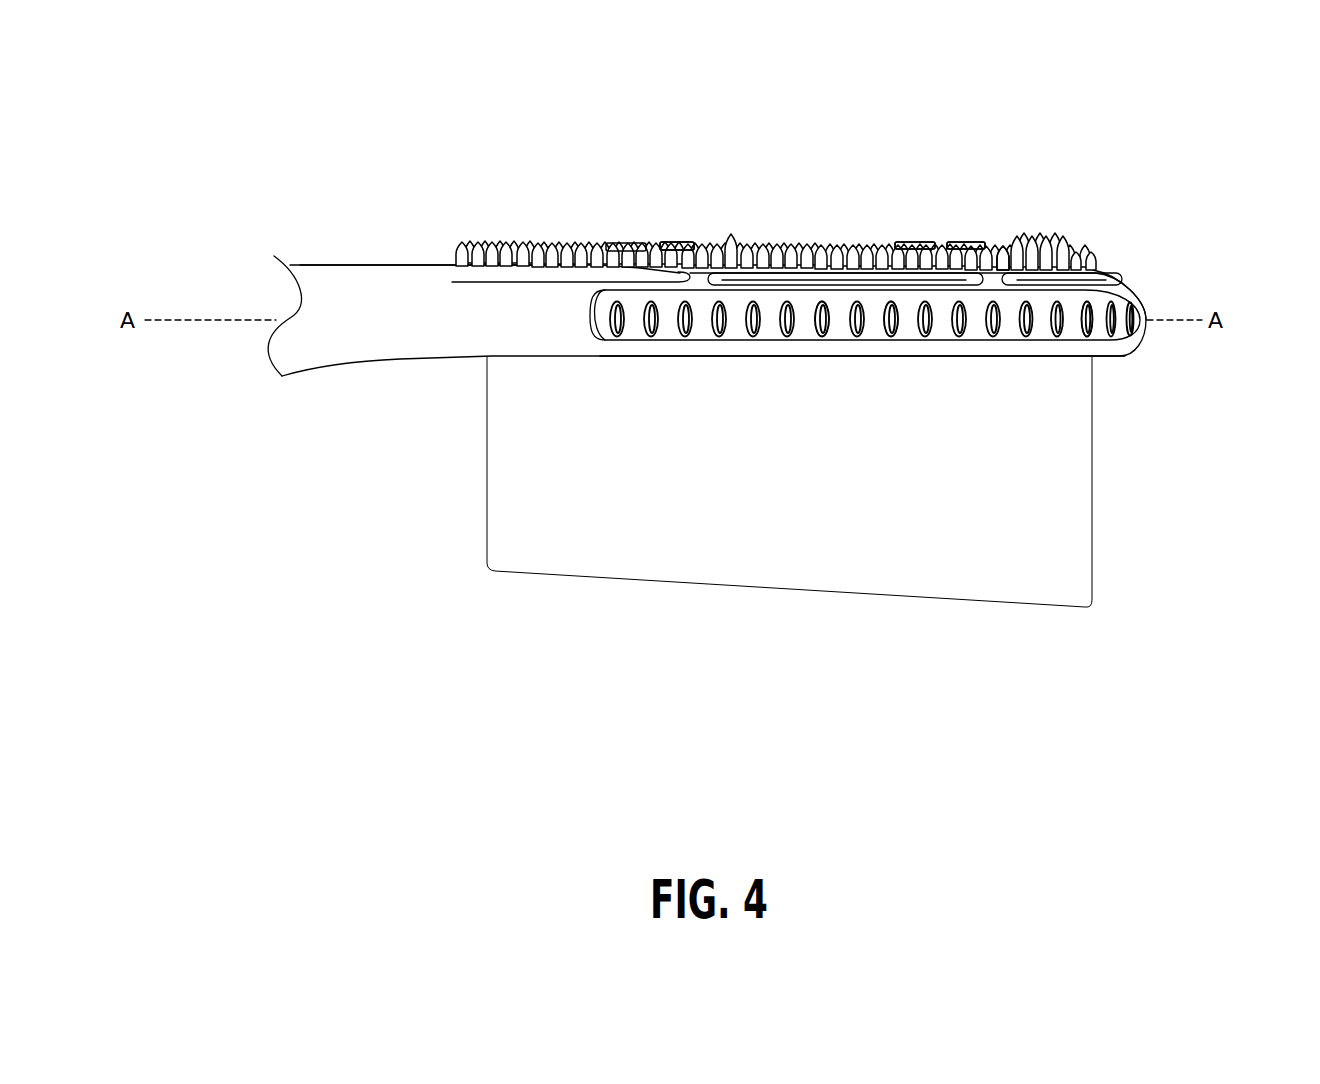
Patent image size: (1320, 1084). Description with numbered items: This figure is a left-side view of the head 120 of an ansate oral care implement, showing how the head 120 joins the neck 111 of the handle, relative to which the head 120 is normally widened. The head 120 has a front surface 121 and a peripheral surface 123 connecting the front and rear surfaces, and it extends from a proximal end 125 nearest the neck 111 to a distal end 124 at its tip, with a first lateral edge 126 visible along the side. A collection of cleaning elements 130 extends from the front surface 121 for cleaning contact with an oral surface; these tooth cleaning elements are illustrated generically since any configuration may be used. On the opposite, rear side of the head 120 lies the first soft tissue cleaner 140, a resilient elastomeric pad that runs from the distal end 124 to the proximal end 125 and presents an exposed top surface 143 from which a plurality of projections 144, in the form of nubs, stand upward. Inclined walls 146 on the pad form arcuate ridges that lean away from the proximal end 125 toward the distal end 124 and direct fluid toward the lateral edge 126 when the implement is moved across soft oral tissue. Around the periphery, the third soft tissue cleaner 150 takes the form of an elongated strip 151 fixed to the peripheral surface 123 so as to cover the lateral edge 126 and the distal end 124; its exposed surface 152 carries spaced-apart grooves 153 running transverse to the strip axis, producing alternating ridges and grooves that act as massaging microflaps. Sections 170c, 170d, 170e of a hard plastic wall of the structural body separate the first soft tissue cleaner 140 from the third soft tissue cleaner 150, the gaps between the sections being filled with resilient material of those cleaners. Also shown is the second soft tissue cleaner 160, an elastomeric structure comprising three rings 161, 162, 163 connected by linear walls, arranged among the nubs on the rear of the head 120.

The neck 111 is at (342, 288).
The head 120 is at (807, 411).
The front surface 121 is at (1022, 372).
The peripheral surface 123 is at (578, 320).
The distal end 124 is at (1113, 268).
The proximal end 125 is at (427, 265).
The first lateral edge 126 is at (900, 276).
The collection of cleaning elements 130 is at (1106, 522).
The first soft tissue cleaner 140 is at (744, 194).
The top surface 143 is at (1010, 256).
The projections 144 is at (455, 258).
The inclined walls 146 is at (627, 243).
The third soft tissue cleaner 150 is at (1140, 283).
The elongated strip 151 is at (583, 314).
The exposed surface 152 is at (768, 332).
The grooves 153 is at (824, 328).
The second soft tissue cleaner 160 is at (971, 228).
The ring 161 is at (924, 241).
The ring 162 is at (737, 240).
The ring 163 is at (670, 255).
The wall section 170c is at (1112, 274).
The wall section 170d is at (862, 276).
The wall section 170e is at (633, 284).